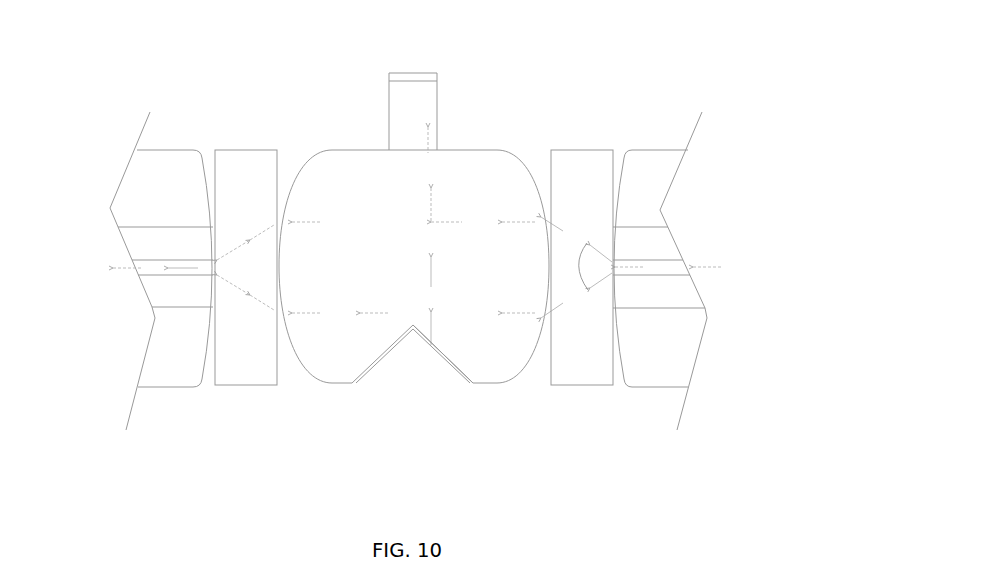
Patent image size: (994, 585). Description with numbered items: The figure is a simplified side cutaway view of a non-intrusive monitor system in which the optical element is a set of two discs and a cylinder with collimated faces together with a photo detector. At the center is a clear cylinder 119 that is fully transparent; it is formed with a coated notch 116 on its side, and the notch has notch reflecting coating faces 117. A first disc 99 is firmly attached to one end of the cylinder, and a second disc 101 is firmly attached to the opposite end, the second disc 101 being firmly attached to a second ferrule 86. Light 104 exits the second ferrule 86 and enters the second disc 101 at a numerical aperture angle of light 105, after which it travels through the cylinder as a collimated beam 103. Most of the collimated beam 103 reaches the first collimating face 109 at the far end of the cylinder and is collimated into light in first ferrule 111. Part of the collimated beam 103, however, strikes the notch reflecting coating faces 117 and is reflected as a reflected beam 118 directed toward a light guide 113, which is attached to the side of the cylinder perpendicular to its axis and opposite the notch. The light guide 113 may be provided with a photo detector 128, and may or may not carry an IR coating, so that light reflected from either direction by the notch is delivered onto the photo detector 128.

The light in first ferrule 111 is at (123, 265).
The first disc 99 is at (255, 365).
The first collimating face 109 is at (285, 188).
The clear cylinder 119 is at (348, 167).
The collimated beam 103 is at (510, 227).
The light guide 113 is at (397, 122).
The photo detector 128 is at (420, 80).
The reflected beam 118 is at (428, 127).
The coated notch 116 is at (402, 350).
The notch reflecting coating faces 117 is at (462, 372).
The second disc 101 is at (580, 165).
The second ferrule 86 is at (660, 170).
The light 104 is at (715, 270).
The numerical aperture angle of light 105 is at (577, 282).